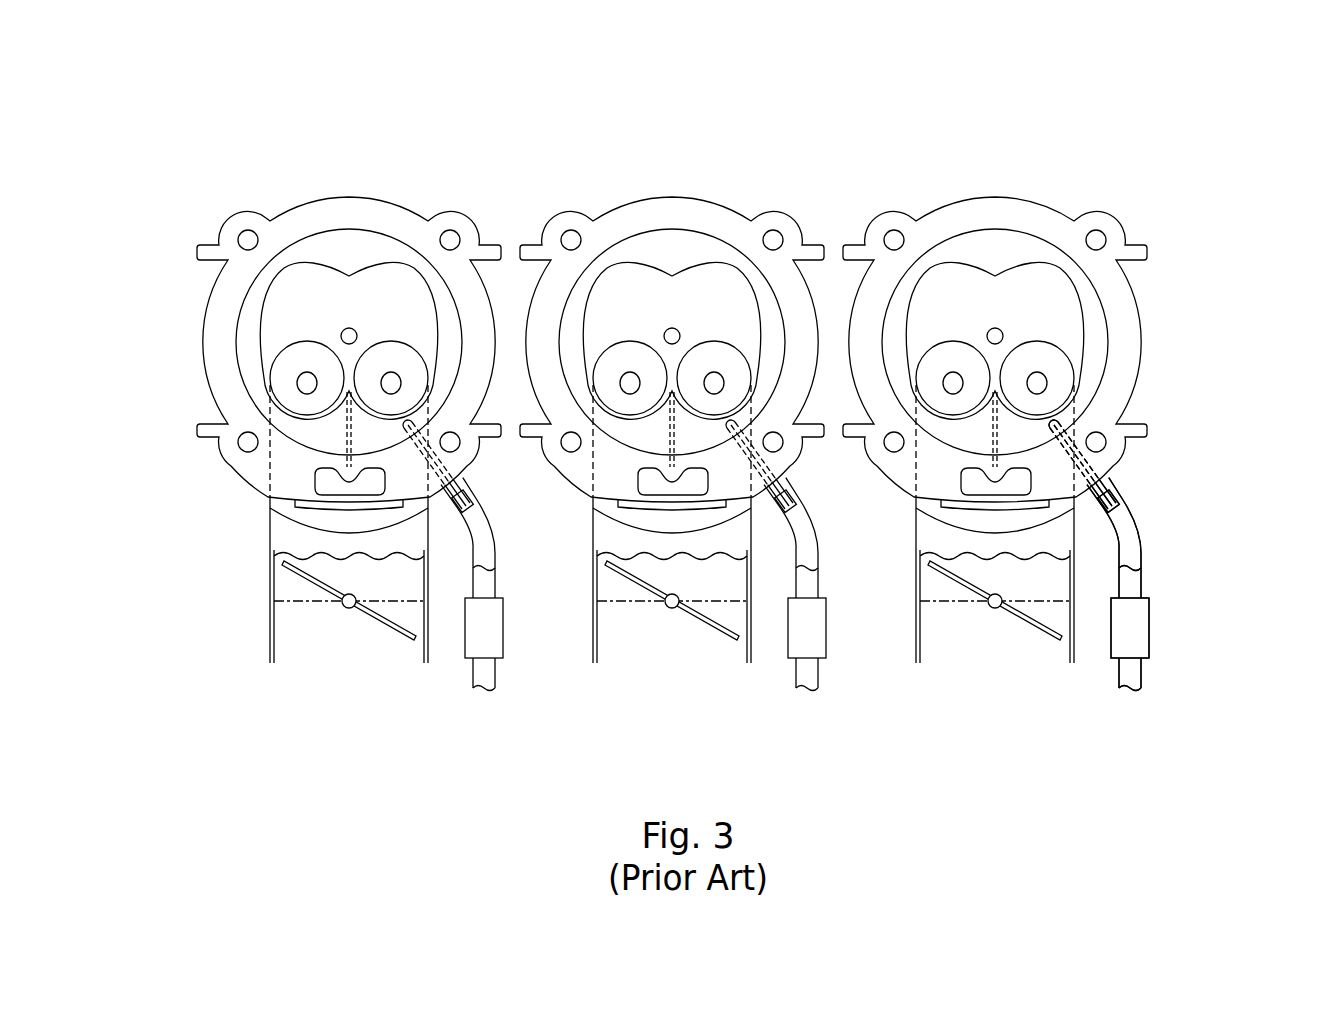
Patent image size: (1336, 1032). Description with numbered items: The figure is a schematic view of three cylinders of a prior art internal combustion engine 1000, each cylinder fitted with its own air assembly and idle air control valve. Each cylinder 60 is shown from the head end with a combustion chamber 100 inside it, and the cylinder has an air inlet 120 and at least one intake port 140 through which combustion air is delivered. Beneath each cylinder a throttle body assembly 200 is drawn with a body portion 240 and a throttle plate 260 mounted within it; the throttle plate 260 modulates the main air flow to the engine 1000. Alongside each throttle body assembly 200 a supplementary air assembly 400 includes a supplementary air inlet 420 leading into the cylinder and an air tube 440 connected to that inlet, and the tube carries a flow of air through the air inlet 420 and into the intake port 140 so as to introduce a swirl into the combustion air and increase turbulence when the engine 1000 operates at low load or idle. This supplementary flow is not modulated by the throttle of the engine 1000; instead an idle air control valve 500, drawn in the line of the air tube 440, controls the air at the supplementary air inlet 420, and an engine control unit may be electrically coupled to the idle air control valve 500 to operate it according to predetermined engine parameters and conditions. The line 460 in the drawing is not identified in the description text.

The internal combustion engine 1000 is at (726, 408).
The cylinder 60 is at (297, 220).
The combustion chamber 100 is at (302, 381).
The intake port 140 is at (370, 357).
The air inlet 120 is at (267, 498).
The throttle body assembly 200 is at (315, 654).
The body portion 240 is at (422, 652).
The throttle plate 260 is at (382, 627).
The supplementary air assembly 400 is at (1168, 600).
The supplementary air inlet 420 is at (467, 485).
The air tube 440 is at (482, 540).
The ignition cable 460 is at (1141, 563).
The idle air control valve 500 is at (490, 627).